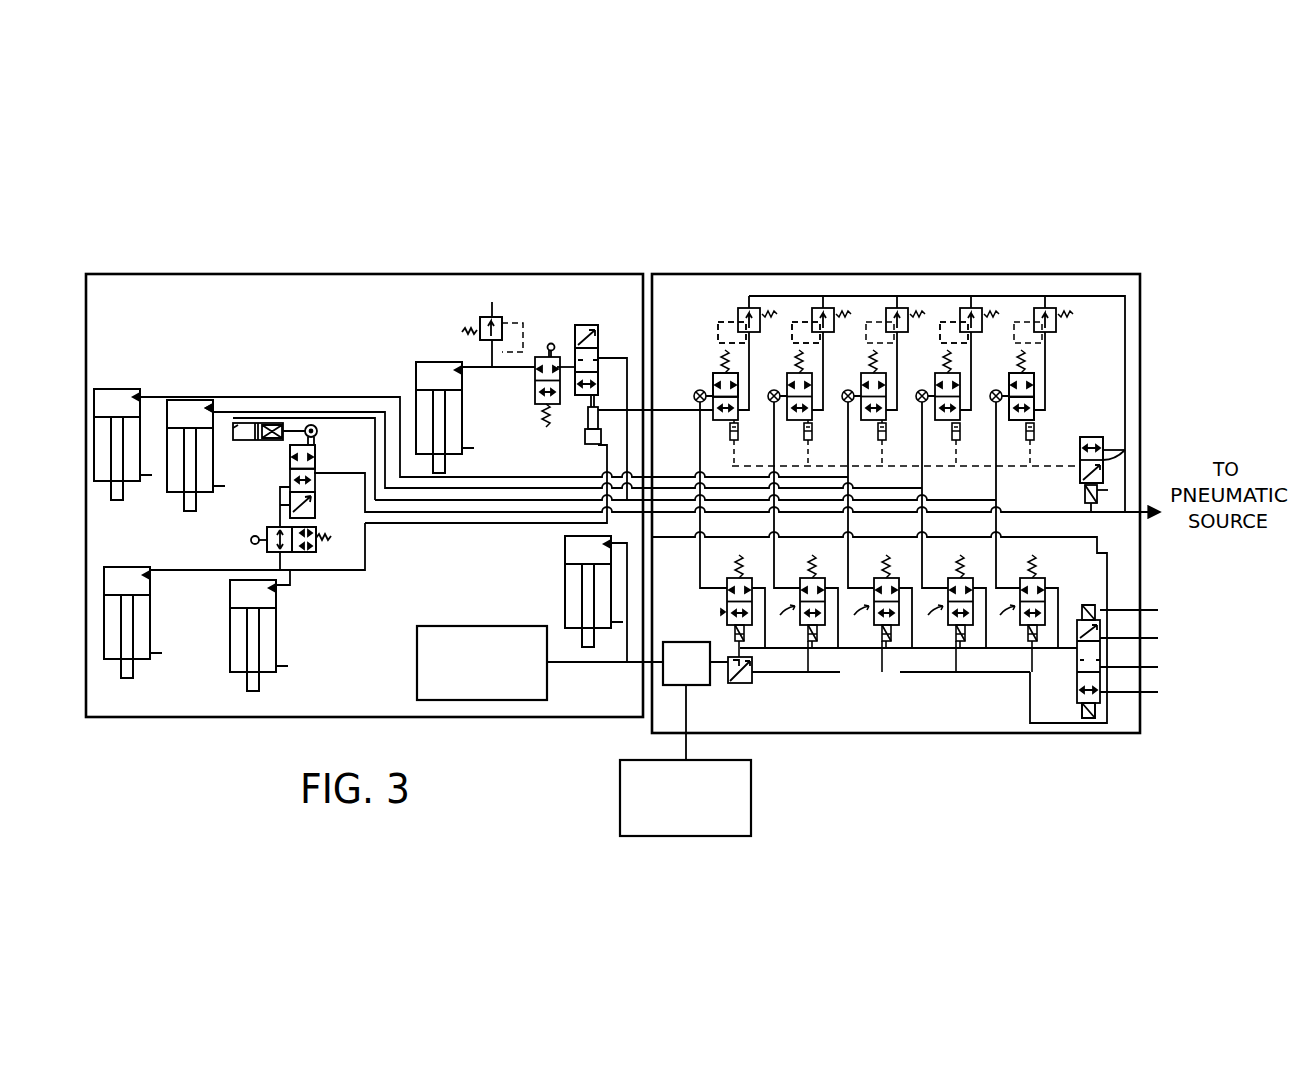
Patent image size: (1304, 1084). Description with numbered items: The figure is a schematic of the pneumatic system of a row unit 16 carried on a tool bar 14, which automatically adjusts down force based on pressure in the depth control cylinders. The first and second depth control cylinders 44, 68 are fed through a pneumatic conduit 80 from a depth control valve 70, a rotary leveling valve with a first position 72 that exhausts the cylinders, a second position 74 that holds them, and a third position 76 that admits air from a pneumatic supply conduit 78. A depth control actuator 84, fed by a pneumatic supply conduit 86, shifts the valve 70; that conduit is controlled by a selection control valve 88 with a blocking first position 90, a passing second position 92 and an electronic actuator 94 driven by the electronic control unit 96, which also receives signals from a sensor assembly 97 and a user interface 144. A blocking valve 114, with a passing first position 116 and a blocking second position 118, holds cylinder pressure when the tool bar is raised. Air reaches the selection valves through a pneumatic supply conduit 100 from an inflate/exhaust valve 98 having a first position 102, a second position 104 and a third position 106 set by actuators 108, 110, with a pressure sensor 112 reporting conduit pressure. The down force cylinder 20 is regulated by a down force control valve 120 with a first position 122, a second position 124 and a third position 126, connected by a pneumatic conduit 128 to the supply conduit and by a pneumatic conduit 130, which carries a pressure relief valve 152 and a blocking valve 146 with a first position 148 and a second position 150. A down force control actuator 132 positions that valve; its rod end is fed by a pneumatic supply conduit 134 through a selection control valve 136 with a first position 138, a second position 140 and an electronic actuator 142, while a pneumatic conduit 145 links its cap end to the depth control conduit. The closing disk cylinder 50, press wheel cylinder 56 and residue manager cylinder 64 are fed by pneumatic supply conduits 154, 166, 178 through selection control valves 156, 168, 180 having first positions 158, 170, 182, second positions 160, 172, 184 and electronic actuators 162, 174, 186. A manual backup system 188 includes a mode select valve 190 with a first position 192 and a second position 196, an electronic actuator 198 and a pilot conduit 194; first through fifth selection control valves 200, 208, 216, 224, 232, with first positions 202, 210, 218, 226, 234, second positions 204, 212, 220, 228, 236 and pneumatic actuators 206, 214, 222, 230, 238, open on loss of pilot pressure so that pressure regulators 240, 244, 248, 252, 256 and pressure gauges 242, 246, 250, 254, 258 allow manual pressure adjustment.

The tool bar 14 is at (1098, 272).
The row unit 16 is at (207, 272).
The down force cylinder 20 is at (422, 362).
The first depth control cylinder 44 is at (152, 630).
The closing disk cylinder 50 is at (178, 492).
The press wheel cylinder 56 is at (116, 389).
The residue manager cylinder 64 is at (565, 590).
The second depth control cylinder 68 is at (279, 625).
The depth control valve 70 is at (328, 492).
The first position 72 is at (290, 458).
The second position 74 is at (315, 478).
The third position 76 is at (290, 504).
The pneumatic supply conduit 78 is at (412, 514).
The pneumatic conduit 80 is at (196, 571).
The depth control actuator 84 is at (238, 424).
The pneumatic supply conduit 86 is at (462, 514).
The selection control valve 88 is at (948, 626).
The first position 90 is at (948, 585).
The second position 92 is at (960, 641).
The electronic actuator 94 is at (968, 645).
The electronic control unit 96 is at (672, 686).
The sensor assembly 97 is at (417, 686).
The inflate/exhaust valve 98 is at (1082, 618).
The pneumatic supply conduit 100 is at (972, 724).
The first position 102 is at (1149, 662).
The second position 104 is at (1149, 689).
The third position 106 is at (1149, 634).
The first actuator 108 is at (1086, 720).
The second actuator 110 is at (1149, 606).
The pressure sensor 112 is at (740, 684).
The blocking valve 114 is at (305, 556).
The first position 116 is at (267, 542).
The second position 118 is at (314, 545).
The down force control valve 120 is at (598, 300).
The first position 122 is at (550, 343).
The second position 124 is at (585, 325).
The third position 126 is at (575, 375).
The pneumatic conduit 128 is at (600, 358).
The pneumatic conduit 130 is at (480, 367).
The down force control actuator 132 is at (585, 430).
The pneumatic supply conduit 134 is at (684, 412).
The selection control valve 136 is at (757, 578).
The first position 138 is at (727, 594).
The second position 140 is at (727, 612).
The electronic actuator 142 is at (735, 640).
The user interface 144 is at (751, 805).
The pneumatic conduit 145 is at (520, 524).
The blocking valve 146 is at (540, 415).
The first position 148 is at (545, 340).
The second position 150 is at (535, 388).
The pressure relief valve 152 is at (478, 318).
The pneumatic supply conduit 154 is at (300, 418).
The selection control valve 156 is at (874, 626).
The first position 158 is at (874, 585).
The second position 160 is at (892, 641).
The electronic actuator 162 is at (882, 672).
The pneumatic supply conduit 166 is at (200, 400).
The selection control valve 168 is at (800, 626).
The first position 170 is at (800, 585).
The second position 172 is at (818, 641).
The electronic actuator 174 is at (808, 672).
The pneumatic supply conduit 178 is at (627, 600).
The selection control valve 180 is at (1035, 575).
The first position 182 is at (1020, 585).
The second position 184 is at (1020, 626).
The electronic actuator 186 is at (1034, 641).
The manual backup system 188 is at (1060, 395).
The mode select valve 190 is at (1092, 434).
The first position 192 is at (1122, 465).
The pilot conduit 194 is at (914, 536).
The second position 196 is at (1080, 455).
The electronic actuator 198 is at (1108, 490).
The first selection control valve 200 is at (934, 372).
The first position 202 is at (956, 442).
The second position 204 is at (948, 322).
The pneumatic actuator 206 is at (1030, 442).
The second selection control valve 208 is at (720, 362).
The first position 210 is at (738, 440).
The second position 212 is at (712, 372).
The pneumatic actuator 214 is at (694, 395).
The third selection control valve 216 is at (872, 360).
The first position 218 is at (886, 440).
The second position 220 is at (860, 372).
The pneumatic actuator 222 is at (850, 404).
The fourth selection control valve 224 is at (818, 308).
The first position 226 is at (812, 440).
The second position 228 is at (785, 372).
The pneumatic actuator 230 is at (778, 404).
The fifth selection control valve 232 is at (1022, 362).
The first position 234 is at (1034, 404).
The second position 236 is at (1040, 380).
The pneumatic actuator 238 is at (1085, 480).
The first pressure regulator 240 is at (967, 308).
The first pressure gauge 242 is at (946, 360).
The second pressure regulator 244 is at (745, 308).
The second pressure gauge 246 is at (713, 384).
The third pressure regulator 248 is at (893, 308).
The third pressure gauge 250 is at (798, 360).
The fourth pressure regulator 252 is at (796, 322).
The fourth pressure gauge 254 is at (722, 322).
The fifth pressure regulator 256 is at (1043, 308).
The fifth pressure gauge 258 is at (1008, 372).